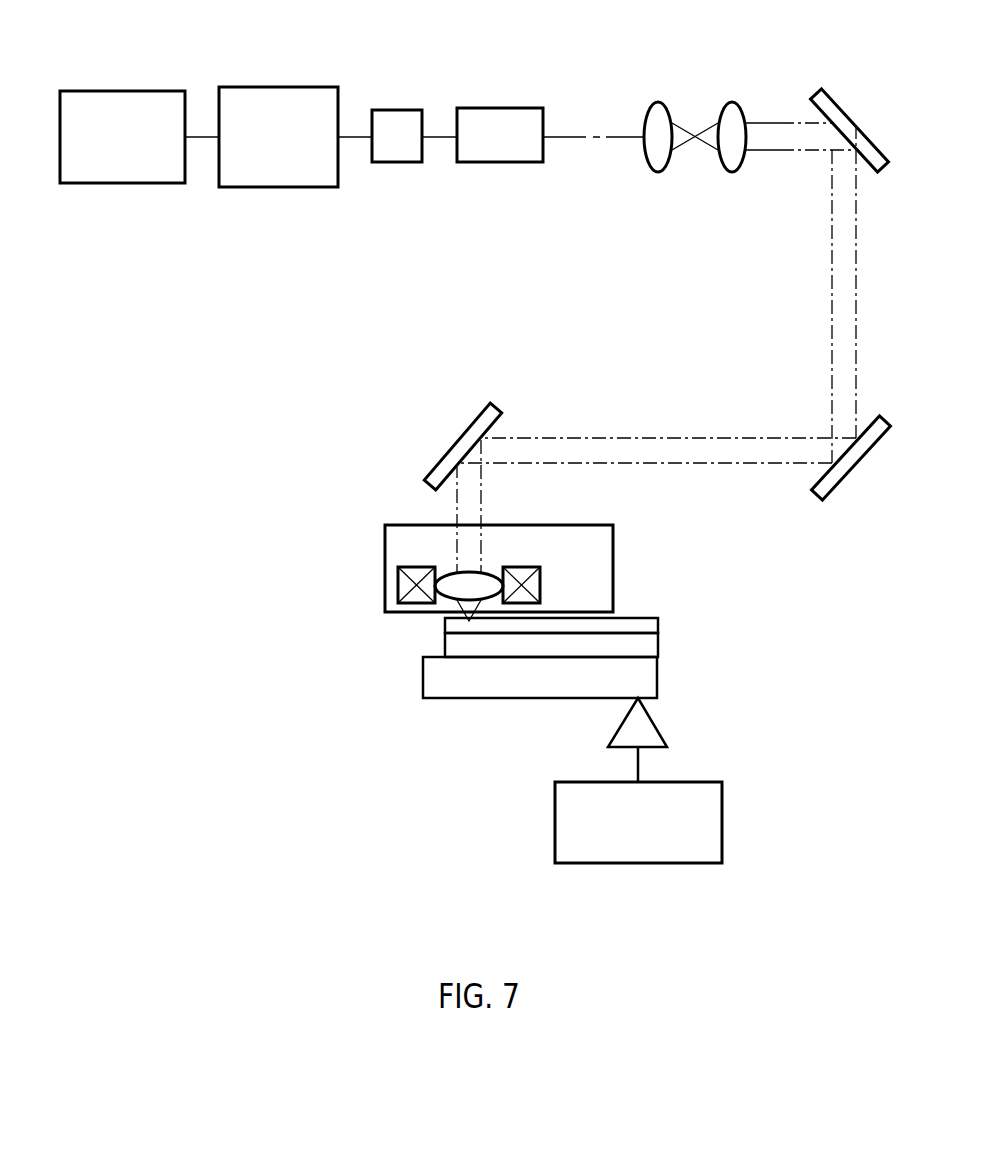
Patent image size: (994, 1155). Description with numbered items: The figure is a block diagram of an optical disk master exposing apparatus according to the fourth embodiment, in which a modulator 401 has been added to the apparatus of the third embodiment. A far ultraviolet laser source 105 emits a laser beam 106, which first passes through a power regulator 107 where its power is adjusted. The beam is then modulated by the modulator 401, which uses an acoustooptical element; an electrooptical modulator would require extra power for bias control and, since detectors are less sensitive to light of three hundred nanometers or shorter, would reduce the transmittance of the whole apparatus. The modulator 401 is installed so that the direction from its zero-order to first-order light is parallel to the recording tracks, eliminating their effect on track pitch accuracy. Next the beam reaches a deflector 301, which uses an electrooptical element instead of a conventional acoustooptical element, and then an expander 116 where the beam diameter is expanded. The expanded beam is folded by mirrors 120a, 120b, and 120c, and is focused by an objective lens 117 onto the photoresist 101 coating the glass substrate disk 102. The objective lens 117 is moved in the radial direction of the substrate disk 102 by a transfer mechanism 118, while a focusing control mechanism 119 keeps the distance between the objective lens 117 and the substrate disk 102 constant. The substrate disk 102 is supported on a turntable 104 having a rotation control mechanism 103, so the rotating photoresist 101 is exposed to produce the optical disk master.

The laser source 105 is at (122, 91).
The laser beam 106 is at (199, 137).
The power regulator 107 is at (283, 87).
The modulator 401 is at (398, 110).
The deflector 301 is at (500, 108).
The expander 116 is at (753, 93).
The mirror 120a is at (859, 121).
The mirror 120b is at (862, 465).
The mirror 120c is at (455, 441).
The transfer mechanism 118 is at (613, 568).
The focusing control mechanism 119 is at (398, 580).
The objective lens 117 is at (442, 569).
The photoresist 101 is at (660, 620).
The substrate disk 102 is at (660, 645).
The turntable 104 is at (660, 672).
The rotation control mechanism 103 is at (555, 828).